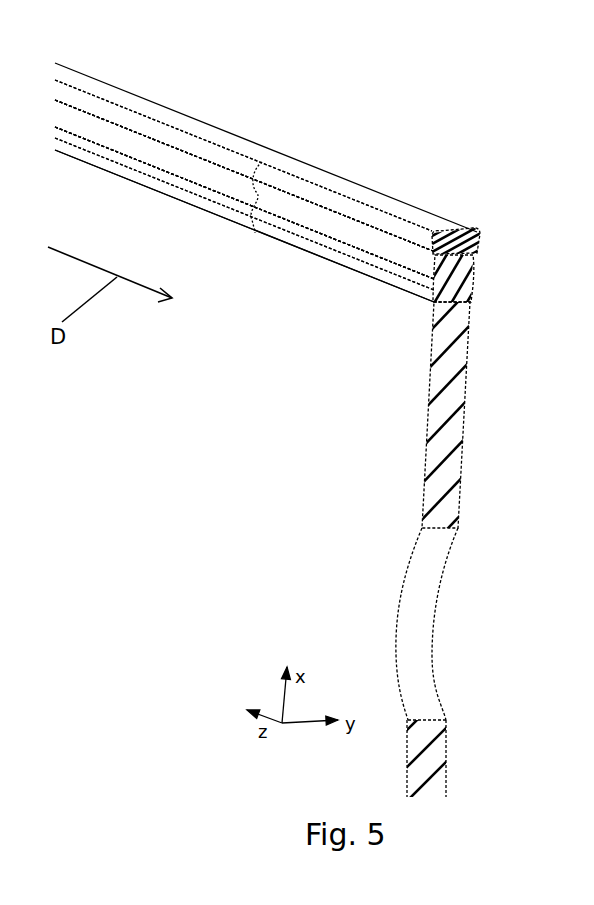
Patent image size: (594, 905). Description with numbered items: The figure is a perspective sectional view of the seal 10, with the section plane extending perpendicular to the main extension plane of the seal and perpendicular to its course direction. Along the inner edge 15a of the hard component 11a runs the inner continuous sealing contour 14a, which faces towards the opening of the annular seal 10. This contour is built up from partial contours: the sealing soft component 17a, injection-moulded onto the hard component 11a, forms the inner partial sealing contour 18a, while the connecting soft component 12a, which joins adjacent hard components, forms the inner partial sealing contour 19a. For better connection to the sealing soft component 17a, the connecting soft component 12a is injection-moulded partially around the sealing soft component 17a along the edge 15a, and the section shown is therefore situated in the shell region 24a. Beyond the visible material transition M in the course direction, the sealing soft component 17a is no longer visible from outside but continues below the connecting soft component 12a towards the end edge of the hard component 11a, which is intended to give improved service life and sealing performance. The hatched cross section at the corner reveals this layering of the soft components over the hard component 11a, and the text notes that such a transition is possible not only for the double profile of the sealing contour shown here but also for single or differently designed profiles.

The seal 10 is at (513, 168).
The hard component 11a is at (450, 460).
The connecting soft component 12a is at (448, 232).
The inner continuous sealing contour 14a is at (143, 168).
The inner edge 15a is at (355, 275).
The sealing soft component 17a is at (180, 143).
The inner partial sealing contour 18a is at (95, 147).
The inner partial sealing contour 19a is at (366, 245).
The shell region 24a is at (318, 197).
The material transition M is at (275, 162).